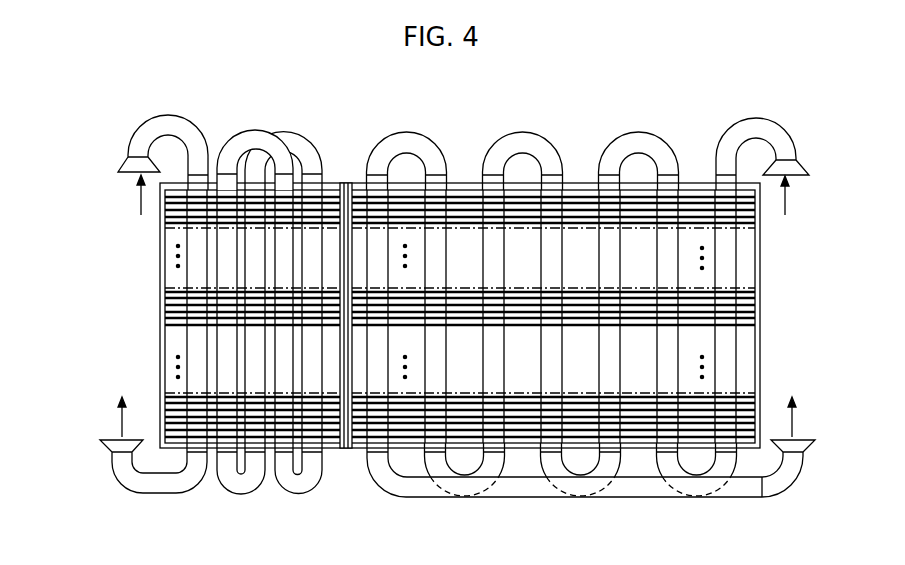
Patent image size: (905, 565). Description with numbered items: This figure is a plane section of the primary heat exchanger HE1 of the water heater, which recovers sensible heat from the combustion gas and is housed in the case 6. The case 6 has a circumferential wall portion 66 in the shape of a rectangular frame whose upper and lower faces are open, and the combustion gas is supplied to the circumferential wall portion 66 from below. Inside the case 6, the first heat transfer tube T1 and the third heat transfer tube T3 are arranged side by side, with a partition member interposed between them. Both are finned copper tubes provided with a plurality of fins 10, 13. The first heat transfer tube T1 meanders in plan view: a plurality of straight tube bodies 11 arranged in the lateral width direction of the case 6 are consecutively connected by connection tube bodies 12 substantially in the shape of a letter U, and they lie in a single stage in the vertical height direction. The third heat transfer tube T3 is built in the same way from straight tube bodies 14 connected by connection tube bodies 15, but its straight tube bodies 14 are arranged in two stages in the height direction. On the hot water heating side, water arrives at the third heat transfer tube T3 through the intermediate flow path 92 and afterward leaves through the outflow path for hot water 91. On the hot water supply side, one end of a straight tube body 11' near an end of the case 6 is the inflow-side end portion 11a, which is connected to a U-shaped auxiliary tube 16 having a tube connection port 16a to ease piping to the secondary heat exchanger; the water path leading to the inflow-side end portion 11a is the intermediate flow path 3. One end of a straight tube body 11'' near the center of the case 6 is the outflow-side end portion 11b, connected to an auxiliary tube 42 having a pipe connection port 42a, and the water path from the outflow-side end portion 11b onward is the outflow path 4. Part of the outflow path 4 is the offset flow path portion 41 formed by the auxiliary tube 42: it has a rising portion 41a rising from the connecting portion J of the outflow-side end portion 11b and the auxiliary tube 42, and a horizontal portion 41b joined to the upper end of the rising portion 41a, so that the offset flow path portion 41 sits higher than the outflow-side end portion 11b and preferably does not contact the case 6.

The primary heat exchanger HE1 is at (129, 84).
The case 6 is at (757, 332).
The circumferential wall portion 66 is at (757, 297).
The fins 13 is at (195, 293).
The fins 10 is at (525, 297).
The straight tube bodies 14 is at (313, 356).
The straight tube bodies 11 is at (614, 316).
The straight tube body 11' is at (753, 316).
The straight tube body 11'' is at (403, 316).
The connecting portion J is at (359, 451).
The connection tube bodies 12 is at (415, 140).
The first heat transfer tube T1 is at (520, 125).
The third heat transfer tube T3 is at (258, 131).
The connection tube bodies 15 is at (288, 140).
The intermediate flow path 92 is at (136, 190).
The outflow path for hot water 91 is at (113, 425).
The inflow-side end portion 11a is at (718, 168).
The auxiliary tube 16 is at (752, 125).
The tube connection port 16a is at (815, 171).
The intermediate flow path 3 is at (785, 193).
The outflow-side end portion 11b is at (370, 462).
The offset flow path portion 41 is at (597, 472).
The rising portion 41a is at (378, 472).
The horizontal portion 41b is at (618, 498).
The auxiliary tube 42 is at (730, 500).
The pipe connection port 42a is at (812, 442).
The outflow path 4 is at (787, 432).